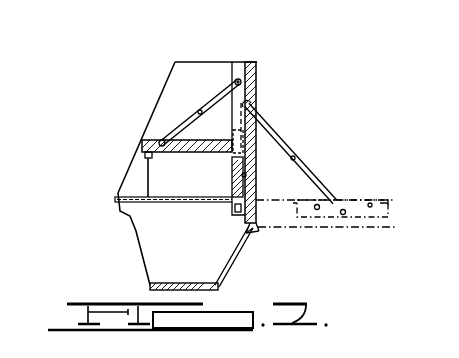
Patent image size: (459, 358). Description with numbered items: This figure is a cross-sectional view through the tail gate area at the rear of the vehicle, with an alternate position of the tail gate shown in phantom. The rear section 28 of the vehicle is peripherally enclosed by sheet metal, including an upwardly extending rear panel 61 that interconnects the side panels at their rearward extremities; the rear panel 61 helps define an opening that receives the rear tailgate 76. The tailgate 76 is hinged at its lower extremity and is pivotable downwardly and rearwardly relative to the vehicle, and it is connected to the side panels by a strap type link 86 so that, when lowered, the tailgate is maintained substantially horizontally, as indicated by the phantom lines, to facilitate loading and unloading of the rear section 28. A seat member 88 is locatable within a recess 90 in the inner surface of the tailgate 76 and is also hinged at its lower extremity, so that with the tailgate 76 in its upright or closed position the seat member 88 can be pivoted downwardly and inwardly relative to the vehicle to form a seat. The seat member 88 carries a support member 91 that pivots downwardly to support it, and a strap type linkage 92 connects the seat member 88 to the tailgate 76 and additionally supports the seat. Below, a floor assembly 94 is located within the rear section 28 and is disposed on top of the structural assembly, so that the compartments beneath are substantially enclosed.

The rear section 28 is at (127, 80).
The recess 90 is at (247, 63).
The strap type linkage 92 is at (212, 100).
The rear tailgate 76 is at (256, 72).
The strap type link 86 is at (283, 133).
The seat member 88 is at (147, 138).
The support member 91 is at (147, 163).
The floor assembly 94 is at (116, 191).
The rear panel 61 is at (243, 256).